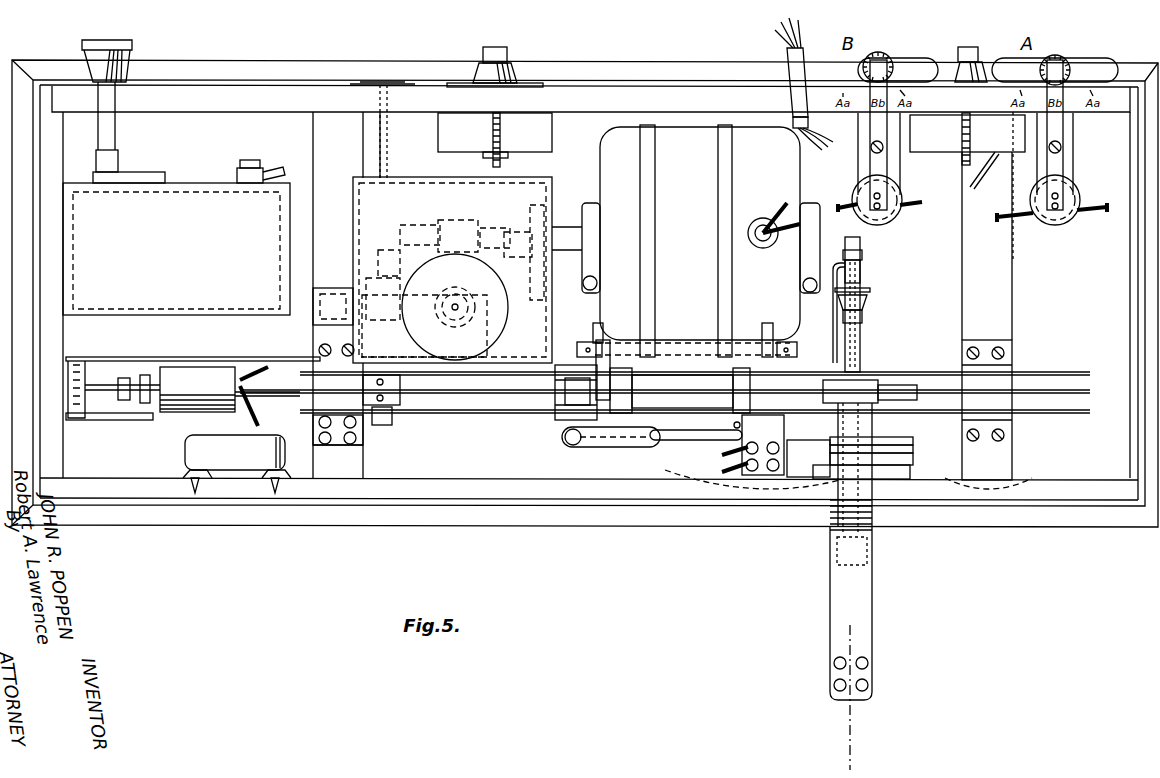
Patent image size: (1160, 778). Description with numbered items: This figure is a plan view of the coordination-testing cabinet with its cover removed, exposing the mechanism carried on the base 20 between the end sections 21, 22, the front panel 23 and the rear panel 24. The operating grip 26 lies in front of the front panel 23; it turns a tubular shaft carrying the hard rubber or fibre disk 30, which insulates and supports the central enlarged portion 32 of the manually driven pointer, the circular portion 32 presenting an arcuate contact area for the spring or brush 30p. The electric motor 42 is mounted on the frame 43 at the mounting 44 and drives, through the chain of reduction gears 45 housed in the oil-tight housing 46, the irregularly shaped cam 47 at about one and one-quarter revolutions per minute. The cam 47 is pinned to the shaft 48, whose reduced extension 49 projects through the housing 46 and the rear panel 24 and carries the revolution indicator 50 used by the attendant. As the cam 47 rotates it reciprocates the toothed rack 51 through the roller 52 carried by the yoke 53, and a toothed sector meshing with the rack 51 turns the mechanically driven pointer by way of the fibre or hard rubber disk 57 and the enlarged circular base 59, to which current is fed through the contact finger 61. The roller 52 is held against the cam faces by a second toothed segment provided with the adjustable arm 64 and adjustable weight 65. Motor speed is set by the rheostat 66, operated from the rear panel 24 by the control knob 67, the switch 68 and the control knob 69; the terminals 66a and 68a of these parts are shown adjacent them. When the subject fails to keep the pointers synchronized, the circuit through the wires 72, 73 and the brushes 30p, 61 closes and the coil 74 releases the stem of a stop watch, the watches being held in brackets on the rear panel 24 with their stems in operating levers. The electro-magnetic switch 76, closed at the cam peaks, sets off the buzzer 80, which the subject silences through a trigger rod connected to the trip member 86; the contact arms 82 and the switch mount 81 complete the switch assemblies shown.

The base 20 is at (375, 520).
The end section 21 is at (52, 333).
The end section 22 is at (1130, 298).
The front panel 23 is at (475, 486).
The rear panel 24 is at (640, 87).
The operating grip 26 is at (865, 646).
The hard rubber or fibre disk 30 is at (871, 459).
The spring or brush 30p is at (808, 458).
The central enlarged portion 32 is at (910, 470).
The electric motor 42 is at (701, 241).
The frame 43 is at (418, 418).
The motor mounting 44 is at (596, 342).
The chain of reduction gears 45 is at (448, 232).
The housing 46 is at (408, 180).
The cam 47 is at (268, 398).
The shaft 48 is at (380, 425).
The reduced extension 49 is at (387, 124).
The revolution indicator 50 is at (364, 84).
The toothed rack 51 is at (691, 390).
The roller 52 is at (565, 416).
The yoke 53 is at (603, 372).
The fibre or hard rubber disk 57 is at (913, 440).
The enlarged circular base 59 is at (913, 449).
The contact finger 61 is at (759, 445).
The adjustable arm 64 is at (605, 450).
The adjustable weight 65 is at (660, 440).
The rheostat 66 is at (176, 249).
The transformer terminal 66a is at (284, 176).
The control knob 67 is at (110, 52).
The switch 68 is at (495, 140).
The relay armature 68a is at (775, 231).
The control knob 69 is at (483, 66).
The wire 72 is at (905, 341).
The wire 73 is at (723, 454).
The coil 74 is at (1073, 188).
The electro-magnetic switch 76 is at (193, 388).
The buzzer 80 is at (237, 464).
The push button switch B 81 is at (895, 188).
The switch contact arms 82 is at (270, 372).
The trip member 86 is at (860, 280).